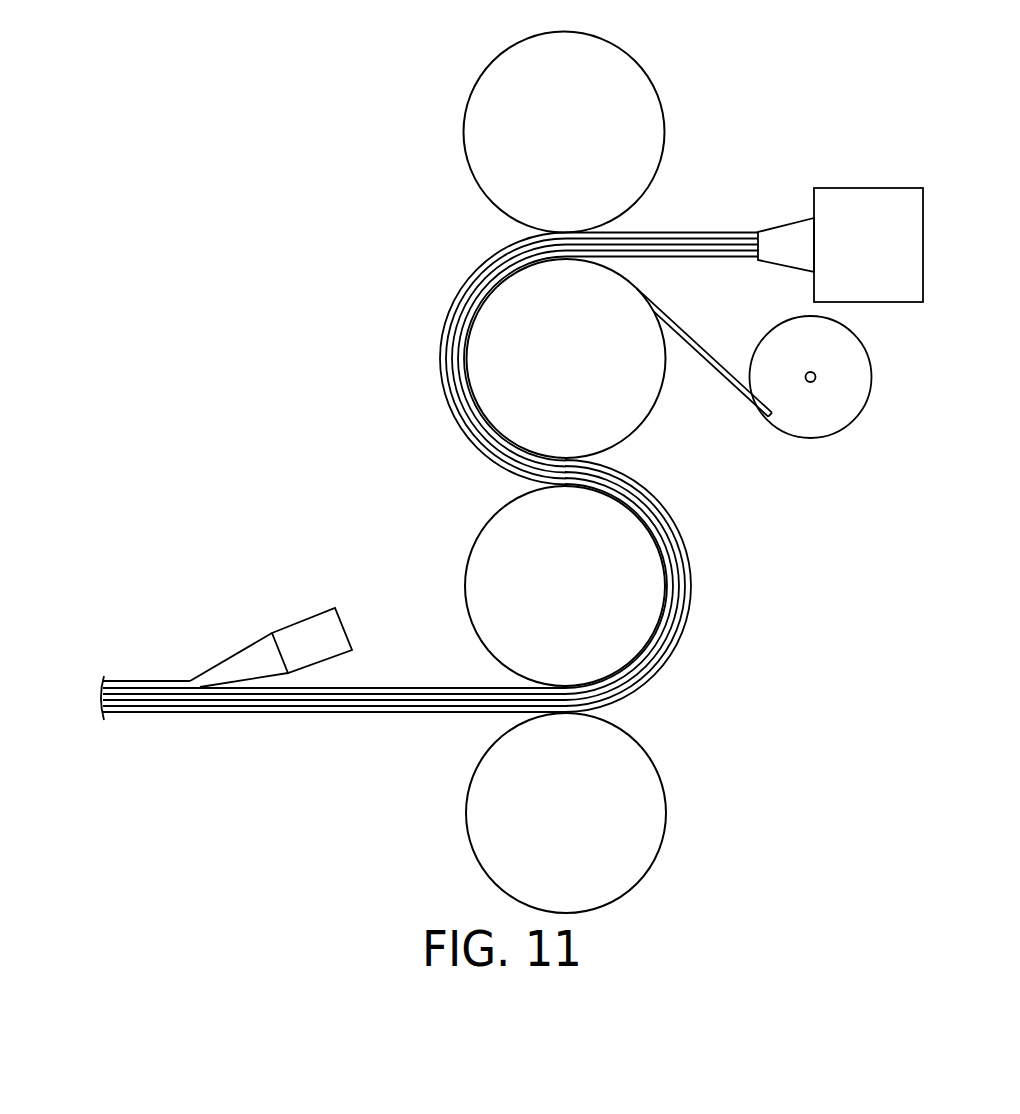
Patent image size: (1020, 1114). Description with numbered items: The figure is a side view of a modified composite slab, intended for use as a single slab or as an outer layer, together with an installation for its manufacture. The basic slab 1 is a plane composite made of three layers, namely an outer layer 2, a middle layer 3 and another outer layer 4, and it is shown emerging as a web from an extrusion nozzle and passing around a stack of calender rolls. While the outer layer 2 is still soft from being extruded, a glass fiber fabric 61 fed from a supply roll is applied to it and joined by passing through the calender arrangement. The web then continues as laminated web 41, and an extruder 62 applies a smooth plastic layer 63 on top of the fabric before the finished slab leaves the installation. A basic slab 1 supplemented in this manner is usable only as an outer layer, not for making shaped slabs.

The basic slab 1 is at (102, 697).
The outer layer 2 is at (697, 232).
The middle layer 3 is at (699, 248).
The outer layer 4 is at (735, 253).
The laminated web 41 is at (412, 688).
The glass fiber fabric 61 is at (723, 377).
The extruder 62 is at (305, 615).
The smooth plastic layer 63 is at (152, 685).